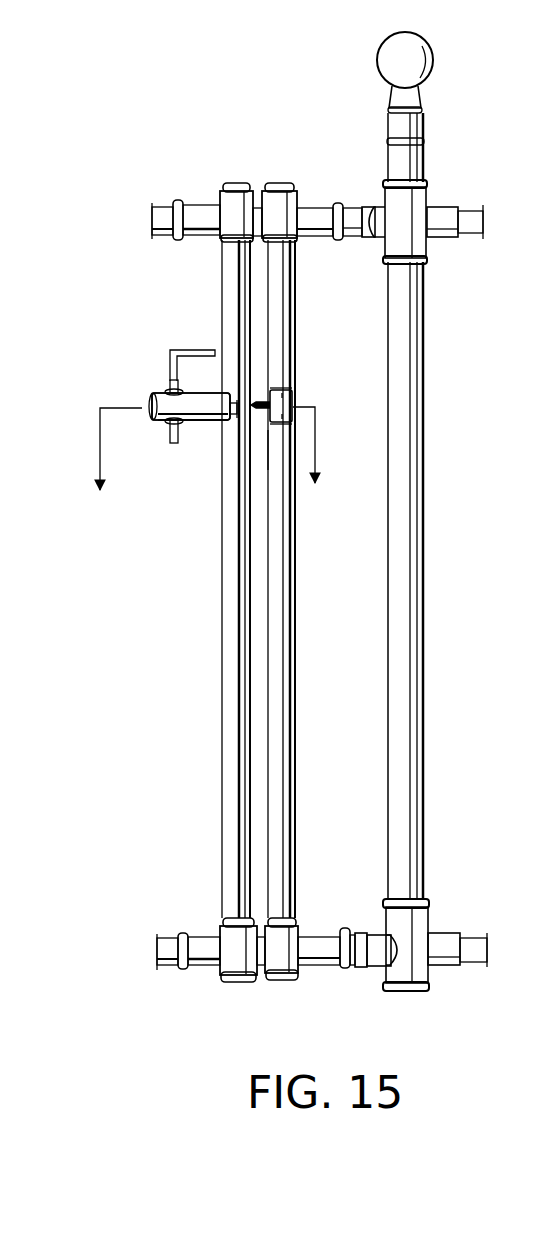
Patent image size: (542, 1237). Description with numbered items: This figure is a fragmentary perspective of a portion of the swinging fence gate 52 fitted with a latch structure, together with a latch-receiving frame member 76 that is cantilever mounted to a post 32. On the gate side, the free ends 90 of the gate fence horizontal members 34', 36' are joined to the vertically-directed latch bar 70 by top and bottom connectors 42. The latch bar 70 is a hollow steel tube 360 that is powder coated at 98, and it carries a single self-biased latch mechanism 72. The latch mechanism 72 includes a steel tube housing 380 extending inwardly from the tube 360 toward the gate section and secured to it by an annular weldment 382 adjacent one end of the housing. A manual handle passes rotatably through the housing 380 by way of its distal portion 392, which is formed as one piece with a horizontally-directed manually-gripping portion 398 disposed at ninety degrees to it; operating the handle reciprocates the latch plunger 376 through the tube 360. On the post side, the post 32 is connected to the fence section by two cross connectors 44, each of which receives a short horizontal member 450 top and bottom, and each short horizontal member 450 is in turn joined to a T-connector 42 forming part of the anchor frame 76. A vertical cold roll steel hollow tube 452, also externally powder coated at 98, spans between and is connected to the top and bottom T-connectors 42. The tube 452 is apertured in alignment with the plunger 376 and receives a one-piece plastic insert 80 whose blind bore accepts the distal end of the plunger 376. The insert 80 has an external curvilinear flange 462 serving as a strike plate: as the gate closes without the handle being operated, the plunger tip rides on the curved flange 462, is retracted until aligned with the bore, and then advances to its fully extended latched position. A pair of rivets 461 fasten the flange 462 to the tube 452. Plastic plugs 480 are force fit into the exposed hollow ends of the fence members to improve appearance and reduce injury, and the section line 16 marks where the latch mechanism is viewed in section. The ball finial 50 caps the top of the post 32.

The ball 50 is at (428, 43).
The post 32 is at (424, 441).
The cross connectors 44 is at (436, 199).
The short horizontal member 450 is at (349, 242).
The latch-receiving frame member 76 is at (344, 190).
The plastic plugs 480 is at (278, 182).
The connectors 42 is at (212, 240).
The free ends 90 is at (178, 213).
The swinging fence gate 52 is at (180, 196).
The gate fence horizontal member 34' is at (111, 228).
The gate fence horizontal member 36' is at (101, 940).
The steel tube 360 is at (230, 702).
The cold roll steel hollow tube 452 is at (278, 690).
The powder coating 98 is at (228, 608).
The latch bar 70 is at (221, 763).
The steel tube housing 380 is at (220, 425).
The annular weldment 382 is at (233, 425).
The distal portion 392 is at (170, 378).
The manually-gripping portion 398 is at (199, 352).
The self-biased latch mechanism 72 is at (193, 427).
The section line 16 is at (225, 456).
The plastic insert 80 is at (283, 385).
The external curvilinear flange 462 is at (294, 400).
The rivets 461 is at (272, 388).
The latch plunger 376 is at (262, 428).